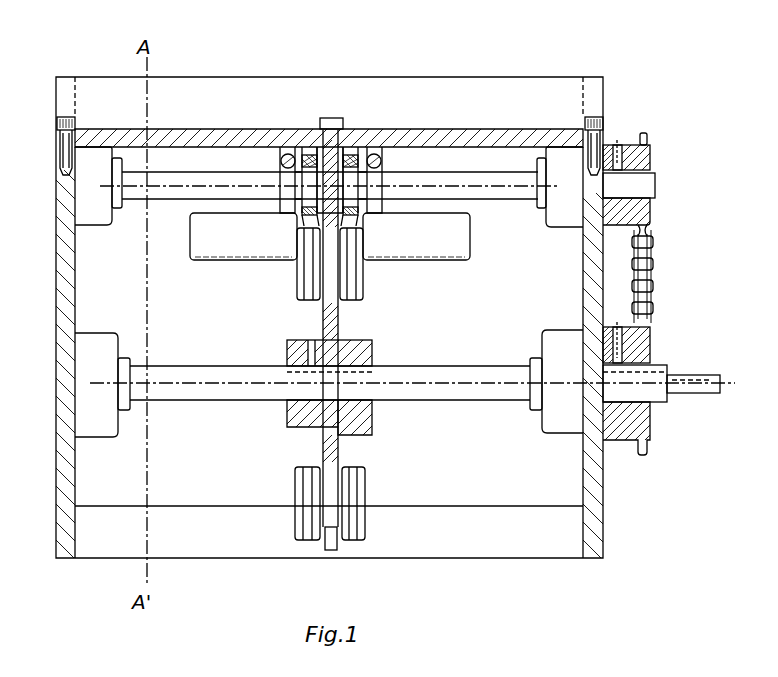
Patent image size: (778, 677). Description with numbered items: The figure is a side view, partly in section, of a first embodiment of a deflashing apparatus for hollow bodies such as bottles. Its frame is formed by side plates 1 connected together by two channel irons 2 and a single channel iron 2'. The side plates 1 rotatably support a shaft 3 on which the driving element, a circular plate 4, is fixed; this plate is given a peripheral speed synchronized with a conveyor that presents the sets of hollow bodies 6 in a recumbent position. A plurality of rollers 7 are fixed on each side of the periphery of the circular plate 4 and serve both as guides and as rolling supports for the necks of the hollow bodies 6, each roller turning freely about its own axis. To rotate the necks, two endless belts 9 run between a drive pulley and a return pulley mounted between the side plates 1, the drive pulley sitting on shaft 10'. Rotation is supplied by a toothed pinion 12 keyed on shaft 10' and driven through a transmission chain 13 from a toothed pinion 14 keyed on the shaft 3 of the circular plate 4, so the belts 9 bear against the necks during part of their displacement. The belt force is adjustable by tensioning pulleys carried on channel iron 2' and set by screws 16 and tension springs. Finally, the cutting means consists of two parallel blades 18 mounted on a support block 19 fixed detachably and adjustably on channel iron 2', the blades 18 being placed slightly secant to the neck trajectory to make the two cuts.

The side plate 1 is at (66, 478).
The channel iron 2 is at (329, 492).
The channel iron 2' is at (329, 79).
The shaft 3 is at (407, 374).
The circular plate 4 is at (320, 331).
The hollow body 6 is at (215, 237).
The roller 7 is at (298, 287).
The endless belt 9 is at (307, 153).
The shaft 10' is at (329, 187).
The toothed pinion 12 is at (645, 160).
The transmission chain 13 is at (654, 262).
The toothed pinion 14 is at (640, 356).
The screw 16 is at (283, 152).
The blade 18 is at (360, 226).
The support block 19 is at (340, 148).